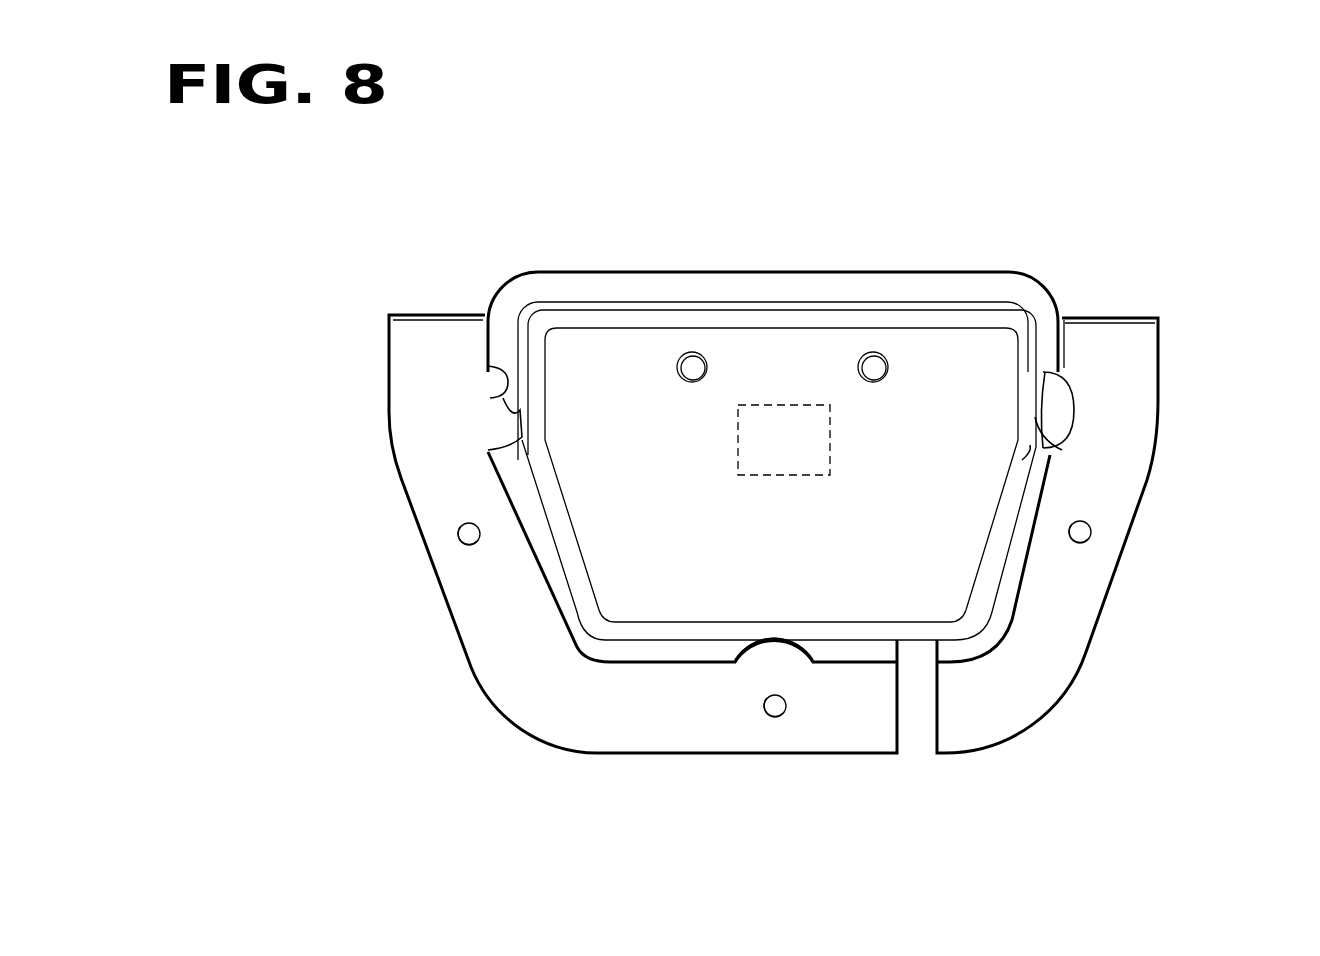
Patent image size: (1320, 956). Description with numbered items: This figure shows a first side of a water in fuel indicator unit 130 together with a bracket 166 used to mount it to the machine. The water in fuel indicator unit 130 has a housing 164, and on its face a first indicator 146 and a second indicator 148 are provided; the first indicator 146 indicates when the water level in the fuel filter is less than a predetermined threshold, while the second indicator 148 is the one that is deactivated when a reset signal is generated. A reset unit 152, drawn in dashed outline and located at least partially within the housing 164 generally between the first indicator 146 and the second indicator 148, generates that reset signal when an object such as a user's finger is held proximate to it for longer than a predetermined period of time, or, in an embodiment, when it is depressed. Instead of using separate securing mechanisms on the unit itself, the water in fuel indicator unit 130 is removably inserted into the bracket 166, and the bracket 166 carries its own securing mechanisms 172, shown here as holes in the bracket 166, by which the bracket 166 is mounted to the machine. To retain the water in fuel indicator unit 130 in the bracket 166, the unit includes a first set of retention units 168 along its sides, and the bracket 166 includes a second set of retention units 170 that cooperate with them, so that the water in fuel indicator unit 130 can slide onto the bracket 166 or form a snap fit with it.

The water in fuel indicator unit 130 is at (775, 481).
The first indicator 146 is at (693, 367).
The second indicator 148 is at (870, 367).
The reset unit 152 is at (798, 404).
The housing 164 is at (765, 475).
The bracket 166 is at (790, 560).
The first set of retention units 168 is at (517, 437).
The second set of retention units 170 is at (495, 377).
The securing mechanisms 172 is at (463, 543).